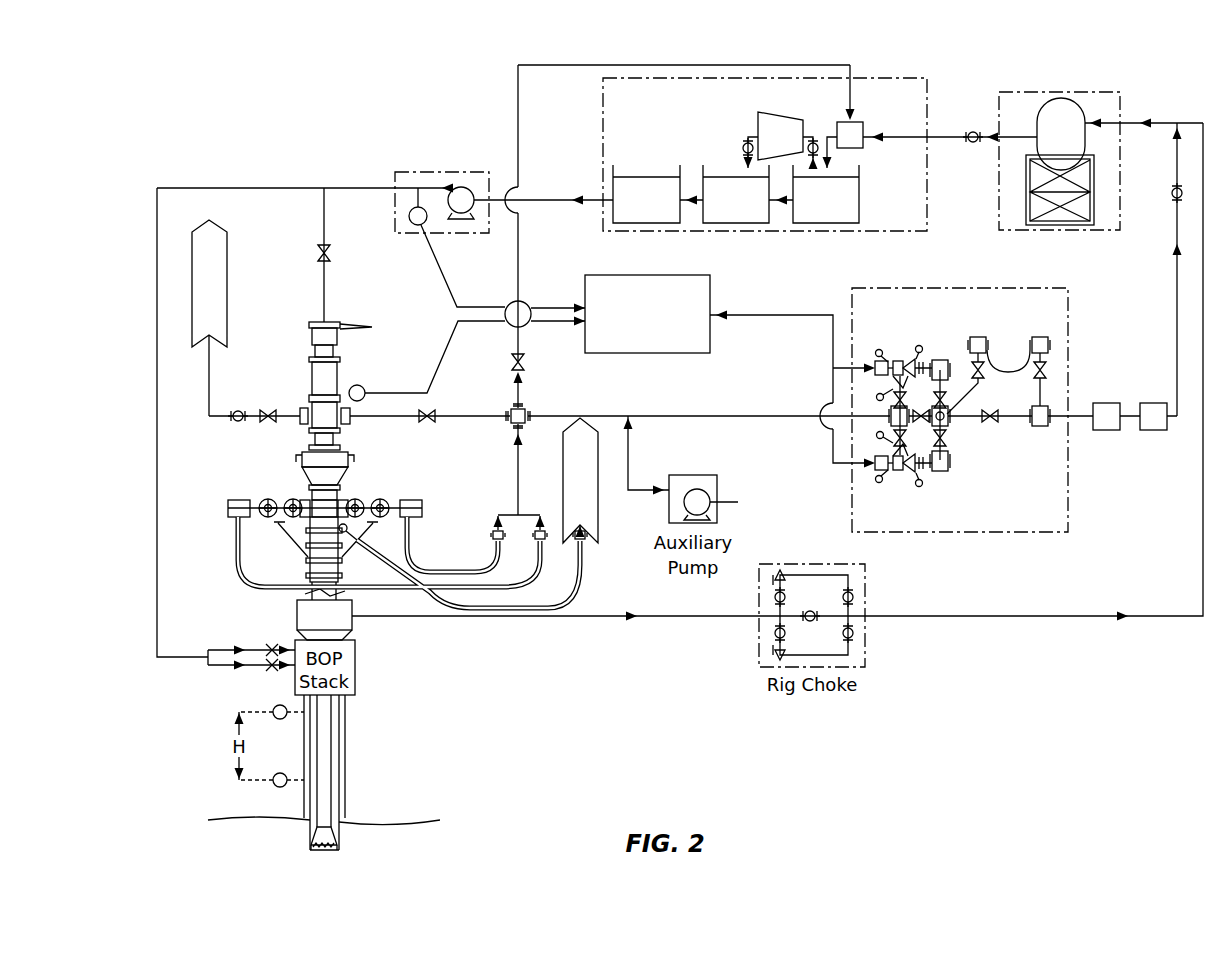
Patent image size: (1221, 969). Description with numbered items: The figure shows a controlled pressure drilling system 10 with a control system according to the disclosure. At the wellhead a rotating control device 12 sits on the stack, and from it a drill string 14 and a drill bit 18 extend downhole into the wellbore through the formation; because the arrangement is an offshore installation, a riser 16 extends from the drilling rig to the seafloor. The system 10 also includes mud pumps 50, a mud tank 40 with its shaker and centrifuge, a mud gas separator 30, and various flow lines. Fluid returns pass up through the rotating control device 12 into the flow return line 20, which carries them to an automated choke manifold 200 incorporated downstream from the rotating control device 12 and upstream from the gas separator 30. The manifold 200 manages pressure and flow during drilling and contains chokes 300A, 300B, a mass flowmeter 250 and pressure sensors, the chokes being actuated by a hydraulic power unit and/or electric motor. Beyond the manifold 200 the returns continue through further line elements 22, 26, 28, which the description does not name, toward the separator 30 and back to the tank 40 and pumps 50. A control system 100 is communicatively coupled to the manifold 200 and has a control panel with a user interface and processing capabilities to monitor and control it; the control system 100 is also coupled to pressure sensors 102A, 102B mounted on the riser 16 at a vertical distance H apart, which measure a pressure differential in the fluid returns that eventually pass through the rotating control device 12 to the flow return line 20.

The drilling system 10 is at (258, 138).
The rotating control device 12 is at (310, 304).
The drill string 14 is at (331, 725).
The riser 16 is at (339, 748).
The drill bit 18 is at (340, 833).
The flow return line 20 is at (762, 414).
The return line 22 is at (1177, 330).
The flow meter 26 is at (1107, 432).
The pressure sensor 28 is at (1153, 432).
The mud gas separator 30 is at (1088, 78).
The mud tank 40 is at (874, 64).
The mud pumps 50 is at (412, 118).
The control system 100 is at (633, 355).
The pressure sensor 102A is at (279, 788).
The pressure sensor 102B is at (279, 704).
The automated choke manifold 200 is at (1000, 424).
The mass flowmeter 250 is at (995, 348).
The choke 300A is at (895, 358).
The choke 300B is at (895, 476).